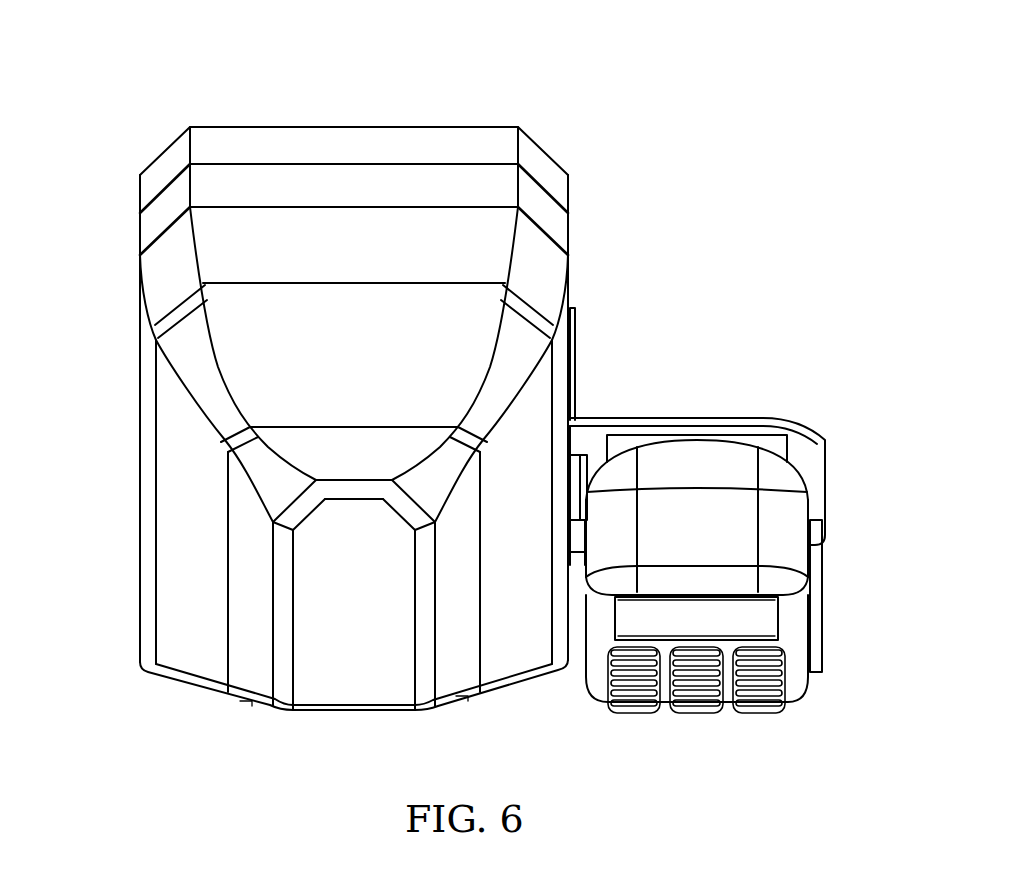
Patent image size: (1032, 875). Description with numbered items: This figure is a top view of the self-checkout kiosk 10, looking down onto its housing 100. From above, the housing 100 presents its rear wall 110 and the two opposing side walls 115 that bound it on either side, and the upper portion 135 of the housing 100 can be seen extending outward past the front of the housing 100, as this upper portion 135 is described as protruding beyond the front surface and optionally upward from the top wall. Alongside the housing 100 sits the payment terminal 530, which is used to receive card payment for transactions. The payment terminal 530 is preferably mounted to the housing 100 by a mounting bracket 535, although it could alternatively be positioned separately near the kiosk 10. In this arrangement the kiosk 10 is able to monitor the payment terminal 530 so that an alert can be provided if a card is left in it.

The self-checkout kiosk 10 is at (106, 48).
The housing 100 is at (586, 197).
The rear wall 110 is at (367, 182).
The side walls 115 is at (140, 460).
The upper portion 135 is at (348, 674).
The payment terminal 530 is at (788, 510).
The mounting bracket 535 is at (817, 457).